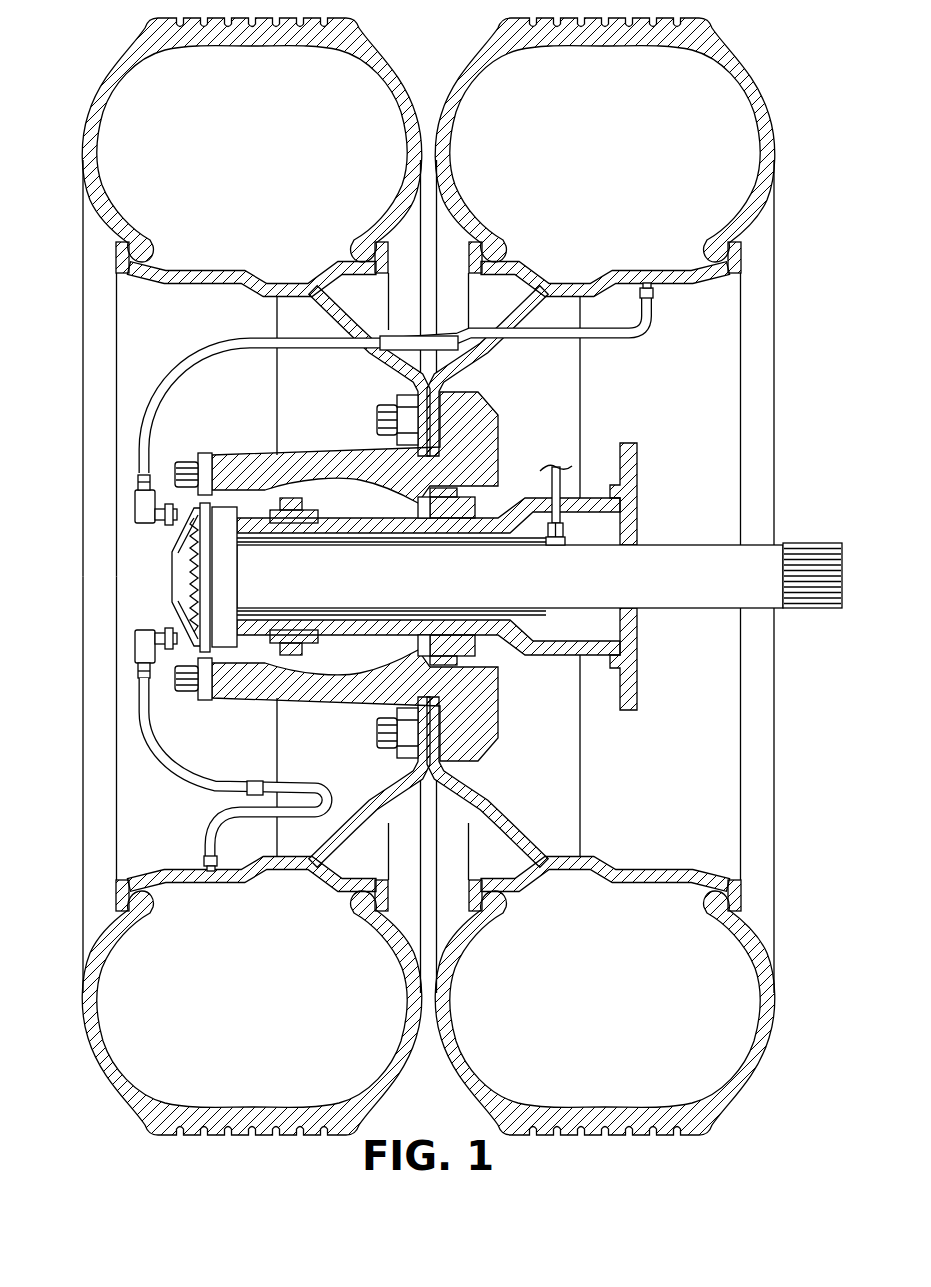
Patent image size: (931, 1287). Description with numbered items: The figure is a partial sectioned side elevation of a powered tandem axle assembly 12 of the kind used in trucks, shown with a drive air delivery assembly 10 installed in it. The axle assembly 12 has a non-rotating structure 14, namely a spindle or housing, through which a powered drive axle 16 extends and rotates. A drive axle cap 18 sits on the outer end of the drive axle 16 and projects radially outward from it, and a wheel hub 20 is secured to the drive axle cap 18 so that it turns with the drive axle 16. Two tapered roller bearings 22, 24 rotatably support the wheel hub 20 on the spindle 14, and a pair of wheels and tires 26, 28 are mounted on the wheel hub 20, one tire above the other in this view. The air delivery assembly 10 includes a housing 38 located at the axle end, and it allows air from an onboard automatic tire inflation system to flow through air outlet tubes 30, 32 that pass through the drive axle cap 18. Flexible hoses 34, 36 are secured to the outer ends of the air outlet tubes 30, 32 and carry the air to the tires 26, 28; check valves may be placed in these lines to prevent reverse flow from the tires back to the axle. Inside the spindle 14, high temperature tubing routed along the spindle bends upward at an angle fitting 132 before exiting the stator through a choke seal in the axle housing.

The drive air delivery assembly 10 is at (477, 576).
The powered tandem axle assembly 12 is at (78, 348).
The non-rotating structure 14 is at (639, 444).
The powered drive axle 16 is at (696, 545).
The drive axle cap 18 is at (172, 577).
The wheel hub 20 is at (327, 455).
The tapered roller bearing 22 is at (424, 633).
The tapered roller bearing 24 is at (309, 628).
The wheel and tire 26 is at (763, 1053).
The wheel and tire 28 is at (111, 1082).
The air outlet tube 30 is at (158, 525).
The air outlet tube 32 is at (158, 628).
The flexible hose 34 is at (179, 372).
The flexible hose 36 is at (175, 778).
The housing 38 is at (238, 567).
The angle fitting 132 is at (563, 533).